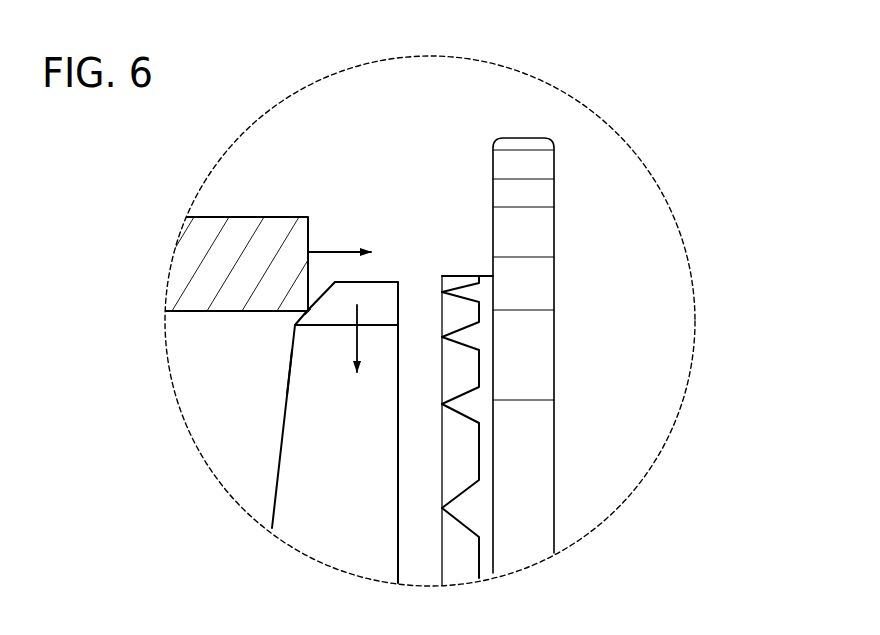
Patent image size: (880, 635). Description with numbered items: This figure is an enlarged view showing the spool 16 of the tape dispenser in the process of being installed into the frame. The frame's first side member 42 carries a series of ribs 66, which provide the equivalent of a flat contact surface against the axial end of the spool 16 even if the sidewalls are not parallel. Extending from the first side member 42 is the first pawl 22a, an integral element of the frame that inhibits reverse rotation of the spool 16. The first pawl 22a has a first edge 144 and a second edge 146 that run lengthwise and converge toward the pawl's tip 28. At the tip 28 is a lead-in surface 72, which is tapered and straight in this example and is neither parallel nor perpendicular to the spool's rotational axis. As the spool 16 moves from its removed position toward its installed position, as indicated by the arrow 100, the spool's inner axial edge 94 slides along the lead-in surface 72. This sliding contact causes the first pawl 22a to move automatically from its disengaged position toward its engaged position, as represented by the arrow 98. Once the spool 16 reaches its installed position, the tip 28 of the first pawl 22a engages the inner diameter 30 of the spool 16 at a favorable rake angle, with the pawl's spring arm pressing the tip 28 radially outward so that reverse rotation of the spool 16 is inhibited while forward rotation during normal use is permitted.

The spool 16 is at (275, 217).
The inner diameter 30 is at (232, 311).
The arrow 100 is at (340, 250).
The tip 28 is at (380, 282).
The lead-in surface 72 is at (327, 291).
The inner axial edge 94 is at (308, 313).
The arrow 98 is at (357, 335).
The first pawl 22a is at (283, 417).
The second edge 146 is at (287, 382).
The ribs 66 is at (442, 404).
The first edge 144 is at (398, 367).
The first side member 42 is at (528, 109).